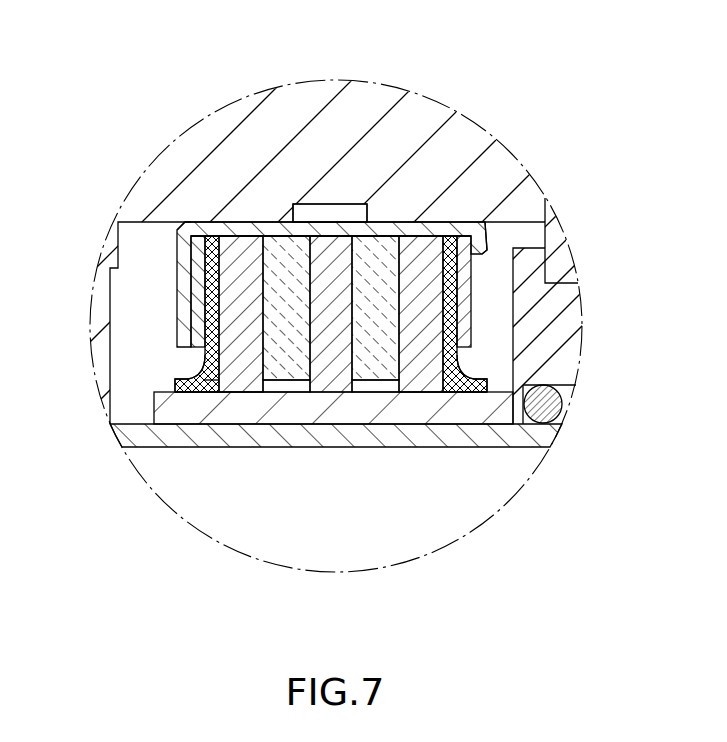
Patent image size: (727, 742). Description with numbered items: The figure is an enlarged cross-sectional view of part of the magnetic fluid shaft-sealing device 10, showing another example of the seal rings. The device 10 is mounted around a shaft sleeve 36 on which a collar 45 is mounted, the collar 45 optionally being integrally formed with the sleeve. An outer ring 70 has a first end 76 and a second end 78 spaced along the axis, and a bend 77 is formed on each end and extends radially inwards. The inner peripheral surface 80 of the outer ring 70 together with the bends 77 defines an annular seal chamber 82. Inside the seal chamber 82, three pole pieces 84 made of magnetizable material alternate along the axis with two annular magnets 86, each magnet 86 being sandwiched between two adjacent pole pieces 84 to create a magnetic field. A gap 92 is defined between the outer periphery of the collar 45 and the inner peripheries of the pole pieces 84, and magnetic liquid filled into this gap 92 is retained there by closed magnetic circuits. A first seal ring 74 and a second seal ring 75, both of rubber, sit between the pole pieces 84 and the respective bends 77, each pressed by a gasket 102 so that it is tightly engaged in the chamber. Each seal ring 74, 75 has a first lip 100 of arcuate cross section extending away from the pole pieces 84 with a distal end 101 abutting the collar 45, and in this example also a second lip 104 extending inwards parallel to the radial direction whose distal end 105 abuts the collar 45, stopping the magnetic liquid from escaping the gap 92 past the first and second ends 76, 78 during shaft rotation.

The magnetic fluid shaft-sealing device 10 is at (576, 150).
The shaft sleeve 36 is at (272, 434).
The collar 45 is at (331, 413).
The outer ring 70 is at (398, 223).
The first seal ring 74 is at (215, 245).
The second seal ring 75 is at (452, 240).
The first end 76 is at (183, 228).
The bend 77 is at (182, 253).
The second end 78 is at (483, 222).
The inner peripheral surface 80 is at (286, 236).
The annular seal chamber 82 is at (292, 385).
The pole piece 84 is at (244, 258).
The magnet 86 is at (373, 243).
The gap 92 is at (237, 390).
The first lip 100 is at (180, 377).
The distal end 101 is at (183, 386).
The gasket 102 is at (197, 308).
The second lip 104 is at (450, 387).
The distal end 105 is at (212, 388).